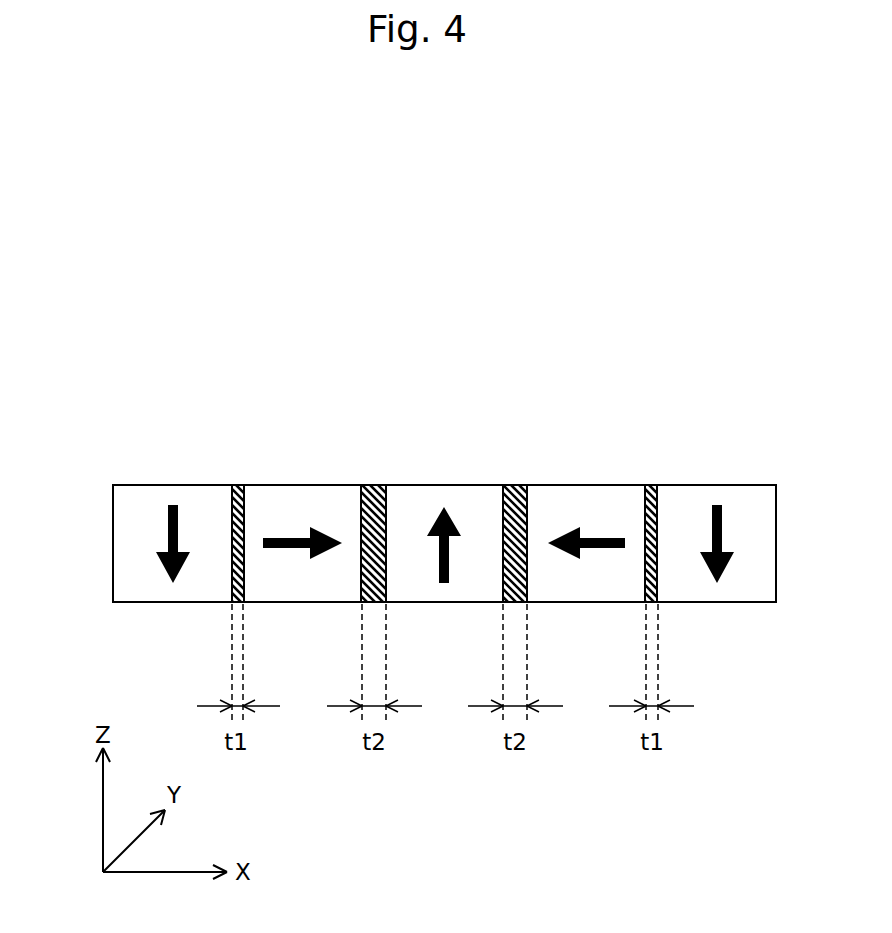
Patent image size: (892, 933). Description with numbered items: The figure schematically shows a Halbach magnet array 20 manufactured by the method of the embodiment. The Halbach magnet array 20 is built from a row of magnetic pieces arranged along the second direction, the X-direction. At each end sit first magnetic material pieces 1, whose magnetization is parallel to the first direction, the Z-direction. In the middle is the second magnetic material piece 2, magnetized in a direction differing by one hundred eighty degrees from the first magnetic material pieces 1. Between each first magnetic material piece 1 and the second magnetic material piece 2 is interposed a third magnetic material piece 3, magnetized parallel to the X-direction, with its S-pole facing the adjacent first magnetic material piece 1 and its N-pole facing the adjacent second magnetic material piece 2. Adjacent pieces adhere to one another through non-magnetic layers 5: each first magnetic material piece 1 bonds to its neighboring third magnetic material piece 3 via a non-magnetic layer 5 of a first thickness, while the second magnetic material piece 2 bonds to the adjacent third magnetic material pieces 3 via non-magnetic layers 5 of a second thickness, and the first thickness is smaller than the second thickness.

The Halbach magnet array 20 is at (610, 368).
The first magnetic material piece 1 is at (163, 490).
The second magnetic material piece 2 is at (453, 490).
The third magnetic material piece 3 is at (307, 490).
The non-magnetic layer 5 is at (238, 490).